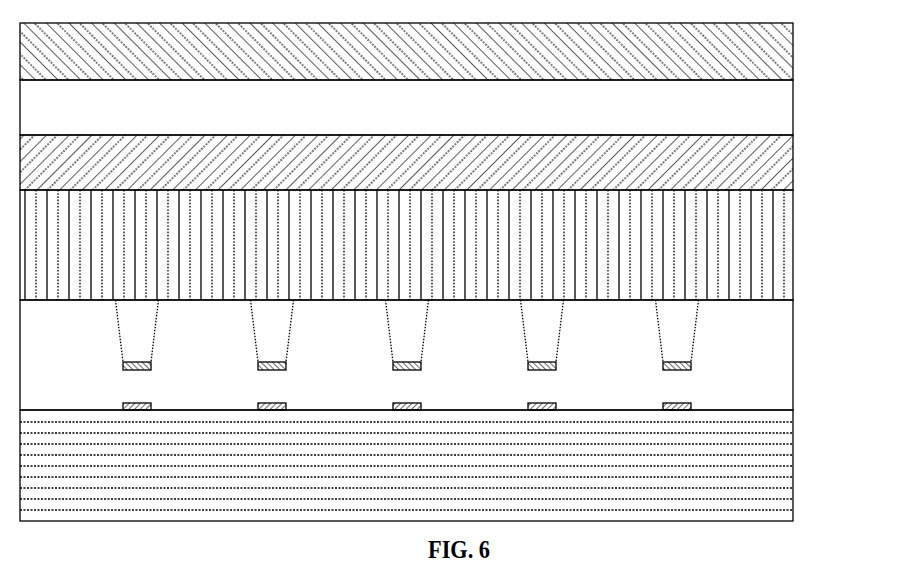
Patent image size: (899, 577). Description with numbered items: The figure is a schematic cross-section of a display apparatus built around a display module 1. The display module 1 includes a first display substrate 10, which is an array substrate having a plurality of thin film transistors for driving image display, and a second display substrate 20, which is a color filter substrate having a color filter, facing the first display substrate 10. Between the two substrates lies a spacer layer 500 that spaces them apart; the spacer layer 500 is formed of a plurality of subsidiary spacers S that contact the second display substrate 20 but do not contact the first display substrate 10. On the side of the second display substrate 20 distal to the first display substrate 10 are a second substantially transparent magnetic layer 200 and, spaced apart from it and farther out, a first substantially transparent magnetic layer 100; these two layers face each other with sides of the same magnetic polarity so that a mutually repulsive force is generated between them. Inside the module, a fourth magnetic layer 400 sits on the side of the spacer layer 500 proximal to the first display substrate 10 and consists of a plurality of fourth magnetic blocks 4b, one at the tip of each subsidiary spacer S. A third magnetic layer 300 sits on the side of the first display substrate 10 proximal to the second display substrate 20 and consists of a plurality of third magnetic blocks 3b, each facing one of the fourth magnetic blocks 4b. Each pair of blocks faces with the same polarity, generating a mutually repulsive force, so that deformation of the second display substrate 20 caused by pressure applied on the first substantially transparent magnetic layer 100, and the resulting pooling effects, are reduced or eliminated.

The display module 1 is at (452, 355).
The first display substrate 10 is at (406, 465).
The second display substrate 20 is at (406, 245).
The first substantially transparent magnetic layer 100 is at (406, 49).
The second substantially transparent magnetic layer 200 is at (406, 162).
The third magnetic layer 300 is at (123, 407).
The third magnetic blocks 3b is at (256, 396).
The fourth magnetic layer 400 is at (123, 365).
The fourth magnetic blocks 4b is at (290, 368).
The spacer layer 500 is at (119, 330).